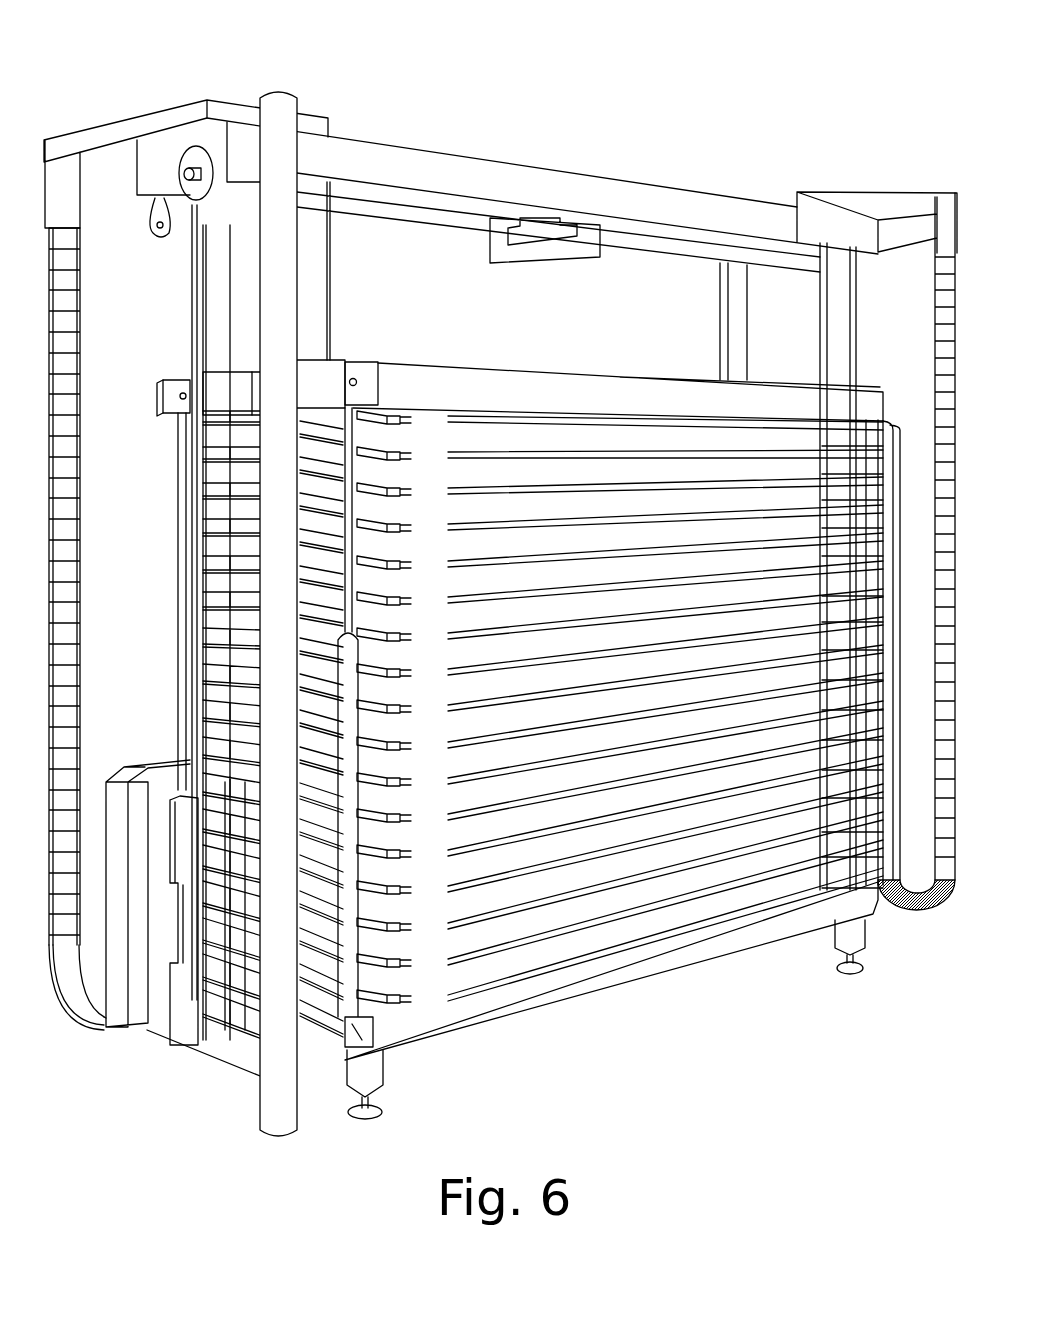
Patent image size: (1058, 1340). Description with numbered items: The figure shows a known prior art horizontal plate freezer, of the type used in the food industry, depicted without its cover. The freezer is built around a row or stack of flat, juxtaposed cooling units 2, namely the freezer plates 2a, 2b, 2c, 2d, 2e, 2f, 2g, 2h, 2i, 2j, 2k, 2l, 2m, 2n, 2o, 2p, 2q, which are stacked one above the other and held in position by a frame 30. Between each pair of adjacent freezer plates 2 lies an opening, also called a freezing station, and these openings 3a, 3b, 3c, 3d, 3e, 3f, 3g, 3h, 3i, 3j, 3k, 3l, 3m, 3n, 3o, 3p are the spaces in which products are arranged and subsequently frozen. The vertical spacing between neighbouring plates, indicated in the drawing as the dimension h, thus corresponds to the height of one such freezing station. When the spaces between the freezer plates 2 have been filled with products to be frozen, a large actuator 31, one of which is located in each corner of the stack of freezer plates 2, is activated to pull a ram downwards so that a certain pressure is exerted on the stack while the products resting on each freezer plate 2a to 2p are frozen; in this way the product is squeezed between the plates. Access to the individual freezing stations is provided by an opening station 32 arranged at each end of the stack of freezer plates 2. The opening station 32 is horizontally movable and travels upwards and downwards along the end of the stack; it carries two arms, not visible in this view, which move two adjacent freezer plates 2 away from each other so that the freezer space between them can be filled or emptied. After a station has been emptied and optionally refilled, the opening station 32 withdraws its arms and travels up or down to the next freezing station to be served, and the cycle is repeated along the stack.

The cooling units 2 is at (897, 645).
The freezer plate 2a is at (543, 953).
The freezer plate 2b is at (543, 920).
The freezer plate 2c is at (543, 887).
The freezer plate 2d is at (543, 854).
The freezer plate 2e is at (543, 822).
The freezer plate 2f is at (543, 789).
The freezer plate 2g is at (543, 757).
The freezer plate 2h is at (543, 724).
The freezer plate 2i is at (543, 691).
The freezer plate 2j is at (543, 659).
The freezer plate 2k is at (543, 626).
The freezer plate 2l is at (543, 593).
The freezer plate 2m is at (543, 561).
The freezer plate 2n is at (543, 529).
The freezer plate 2o is at (543, 497).
The freezer plate 2p is at (543, 461).
The freezer plate 2q is at (543, 425).
The opening 3a is at (814, 888).
The opening 3b is at (834, 857).
The opening 3c is at (814, 832).
The opening 3d is at (833, 798).
The opening 3e is at (813, 770).
The opening 3f is at (834, 740).
The opening 3g is at (813, 710).
The opening 3h is at (833, 680).
The opening 3i is at (815, 648).
The opening 3j is at (835, 620).
The opening 3k is at (814, 597).
The opening 3l is at (834, 555).
The opening 3m is at (811, 527).
The opening 3n is at (833, 500).
The opening 3o is at (813, 473).
The opening 3p is at (833, 447).
The shelf spacing h is at (500, 637).
The frame 30 is at (276, 104).
The actuator 31 is at (345, 1002).
The opening station 32 is at (218, 1003).